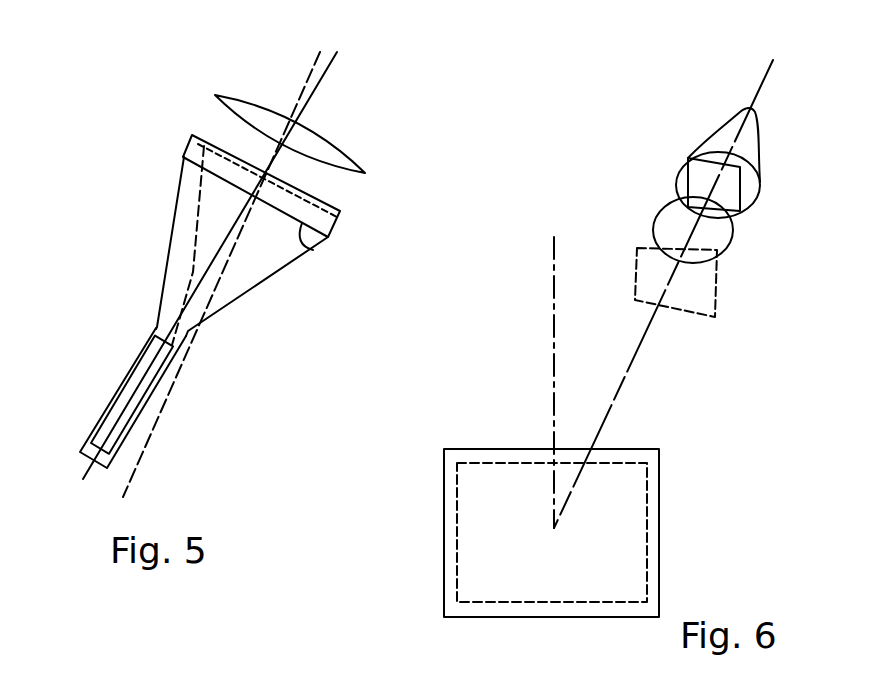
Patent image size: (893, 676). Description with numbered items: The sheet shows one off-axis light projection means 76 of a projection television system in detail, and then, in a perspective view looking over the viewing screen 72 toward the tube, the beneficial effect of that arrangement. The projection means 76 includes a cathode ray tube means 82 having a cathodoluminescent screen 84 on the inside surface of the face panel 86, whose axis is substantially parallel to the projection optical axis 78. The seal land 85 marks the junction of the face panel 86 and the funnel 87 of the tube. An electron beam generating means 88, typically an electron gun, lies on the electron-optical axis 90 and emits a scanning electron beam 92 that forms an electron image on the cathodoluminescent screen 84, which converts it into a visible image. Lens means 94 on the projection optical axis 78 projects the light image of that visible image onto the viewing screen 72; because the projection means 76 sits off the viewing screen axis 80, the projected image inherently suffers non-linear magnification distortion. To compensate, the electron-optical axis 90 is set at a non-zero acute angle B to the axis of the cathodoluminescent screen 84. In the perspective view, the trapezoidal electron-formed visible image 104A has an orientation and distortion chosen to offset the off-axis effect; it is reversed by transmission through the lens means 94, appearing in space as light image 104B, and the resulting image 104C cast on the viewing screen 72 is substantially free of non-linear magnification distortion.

In FIG. 6, the viewing screen 72 is at (444, 512).
In FIG. 5, the projection means 76 is at (130, 101).
In FIG. 6, the projection means 76 is at (823, 99).
In FIG. 5, the projection optical axis 78 is at (320, 52).
In FIG. 6, the viewing screen axis 80 is at (554, 341).
In FIG. 5, the cathode ray tube means 82 is at (152, 232).
In FIG. 5, the cathodoluminescent screen 84 is at (188, 146).
In FIG. 5, the seal land 85 is at (313, 250).
In FIG. 5, the face panel 86 is at (272, 206).
In FIG. 6, the face panel 86 is at (756, 196).
In FIG. 5, the funnel 87 is at (263, 283).
In FIG. 5, the electron beam generating means 88 is at (119, 393).
In FIG. 5, the electron-optical axis 90 is at (82, 477).
In FIG. 5, the scanning electron beam 92 is at (193, 271).
In FIG. 5, the lens means 94 is at (242, 95).
In FIG. 6, the lens means 94 is at (733, 241).
In FIG. 6, the electron-formed visible image 104A is at (688, 160).
In FIG. 6, the light image 104B is at (716, 318).
In FIG. 6, the image cast on viewing screen 104C is at (457, 478).
In FIG. 5, the angle B is at (278, 67).